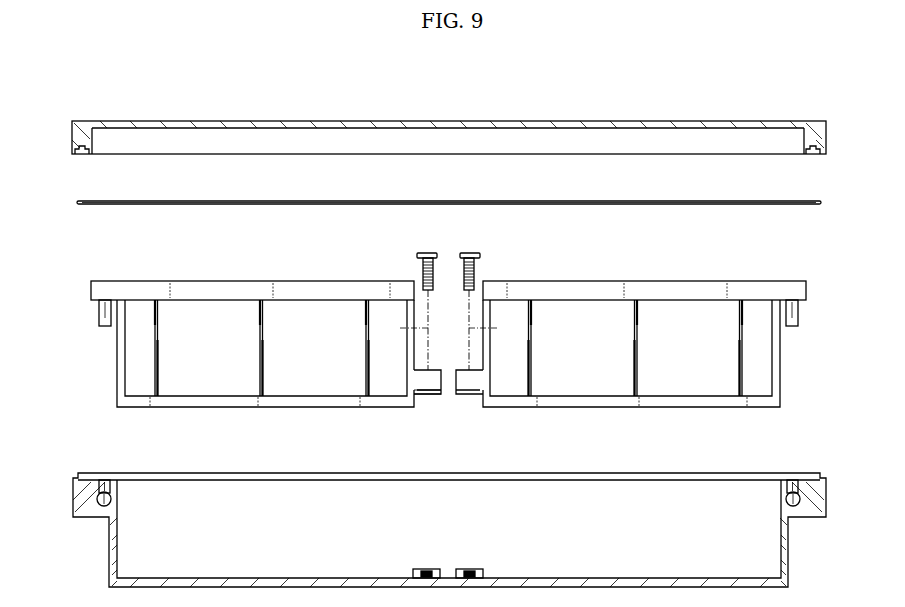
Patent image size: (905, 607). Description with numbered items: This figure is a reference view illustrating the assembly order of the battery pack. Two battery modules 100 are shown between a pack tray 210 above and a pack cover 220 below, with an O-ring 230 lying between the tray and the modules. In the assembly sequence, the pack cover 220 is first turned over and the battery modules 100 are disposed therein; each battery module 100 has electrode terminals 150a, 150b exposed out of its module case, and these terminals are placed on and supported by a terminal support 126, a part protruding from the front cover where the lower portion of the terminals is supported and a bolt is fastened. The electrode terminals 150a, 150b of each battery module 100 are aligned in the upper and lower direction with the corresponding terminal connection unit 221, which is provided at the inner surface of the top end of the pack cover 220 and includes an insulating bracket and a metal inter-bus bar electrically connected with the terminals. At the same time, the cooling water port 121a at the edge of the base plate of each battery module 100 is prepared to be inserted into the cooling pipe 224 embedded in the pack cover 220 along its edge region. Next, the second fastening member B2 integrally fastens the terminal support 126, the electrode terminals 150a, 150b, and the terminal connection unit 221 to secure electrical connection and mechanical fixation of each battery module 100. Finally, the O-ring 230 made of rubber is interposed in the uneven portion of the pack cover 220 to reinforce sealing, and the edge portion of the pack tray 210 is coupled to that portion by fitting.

The pack tray 210 is at (710, 109).
The O-ring 230 is at (612, 200).
The battery module 100 is at (218, 270).
The cooling water port 121a is at (99, 310).
The second fastening member B2 is at (469, 252).
The terminal support 126 is at (434, 370).
The electrode terminal 150b is at (427, 397).
The electrode terminal 150a is at (470, 397).
The pack cover 220 is at (713, 459).
The cooling pipe 224 is at (104, 506).
The terminal connection unit 221 is at (420, 568).